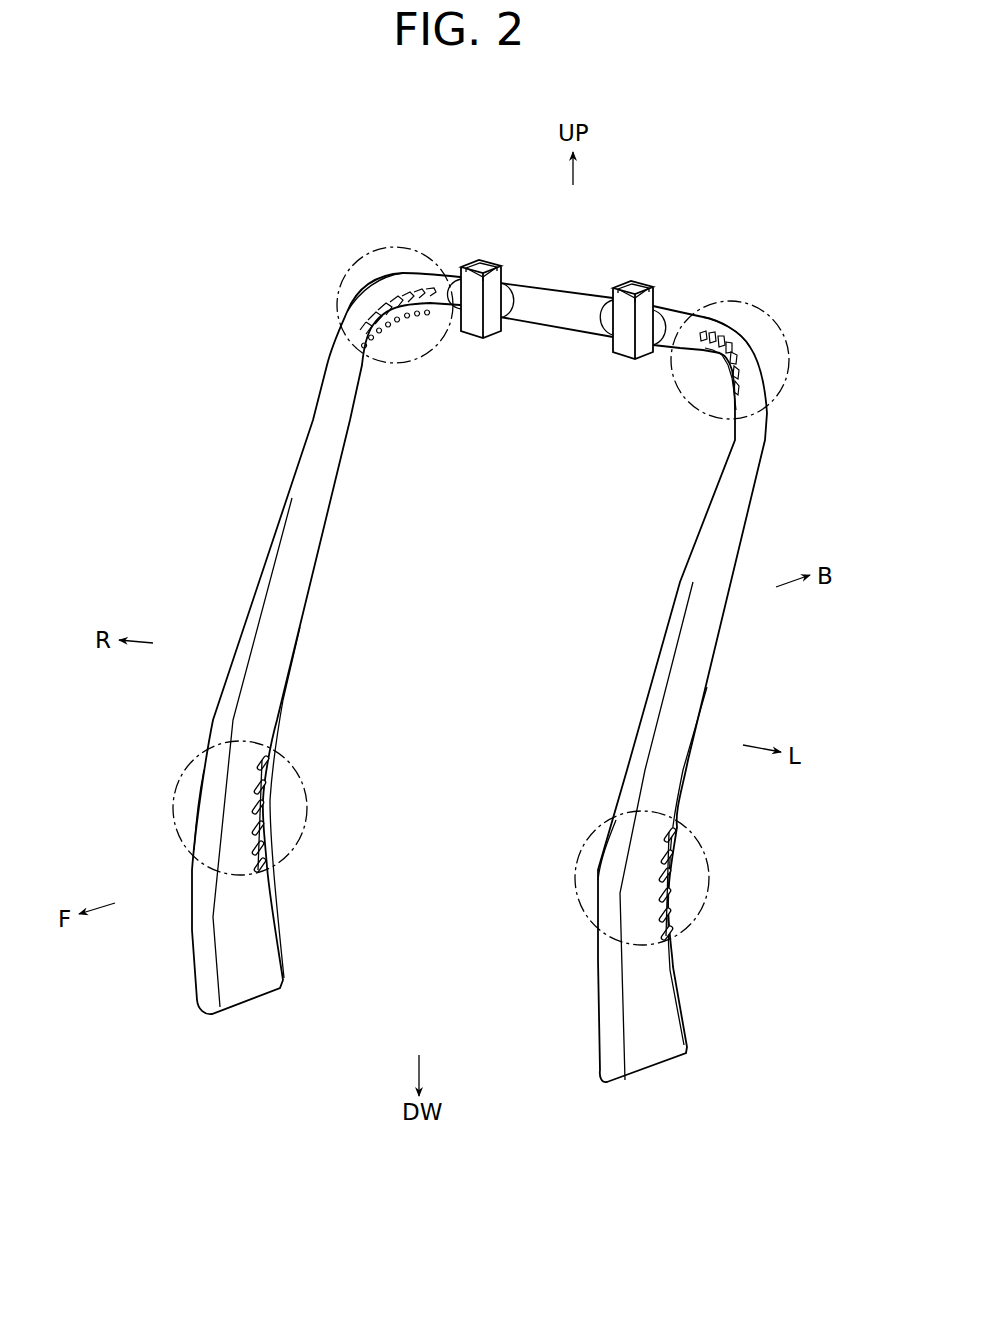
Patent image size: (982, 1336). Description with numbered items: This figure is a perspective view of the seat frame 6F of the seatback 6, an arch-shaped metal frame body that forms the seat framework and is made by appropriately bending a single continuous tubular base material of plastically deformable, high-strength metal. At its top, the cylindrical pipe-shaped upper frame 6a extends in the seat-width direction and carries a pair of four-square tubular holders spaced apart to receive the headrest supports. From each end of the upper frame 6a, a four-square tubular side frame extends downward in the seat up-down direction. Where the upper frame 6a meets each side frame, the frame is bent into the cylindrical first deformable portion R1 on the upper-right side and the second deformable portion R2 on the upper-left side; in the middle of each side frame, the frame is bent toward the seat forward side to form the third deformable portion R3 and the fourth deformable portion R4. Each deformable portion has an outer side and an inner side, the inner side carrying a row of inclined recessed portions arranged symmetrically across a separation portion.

The seatback 6 is at (471, 626).
The seat frame 6F is at (694, 250).
The upper frame 6a is at (558, 328).
The first deformable portion R1 is at (400, 243).
The second deformable portion R2 is at (781, 324).
The third deformable portion R3 is at (181, 775).
The fourth deformable portion R4 is at (587, 842).